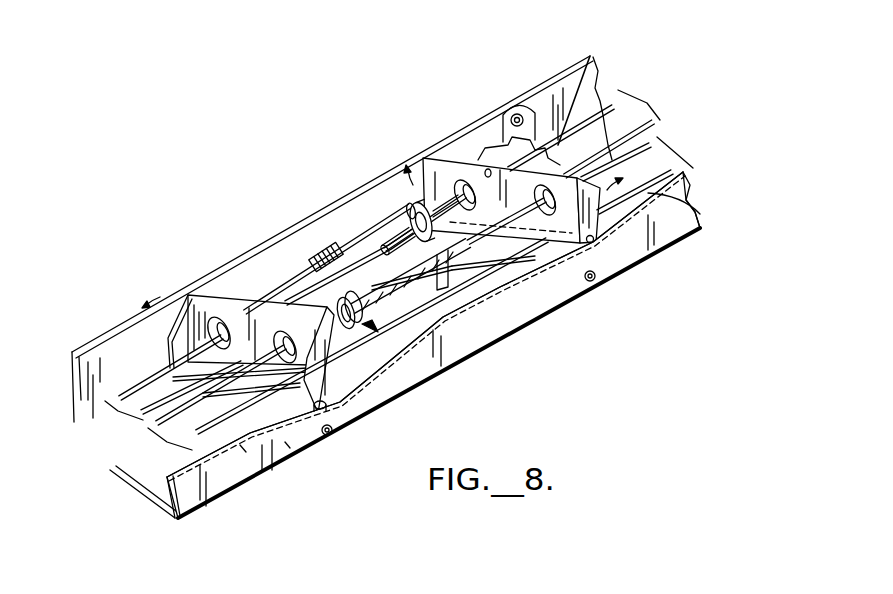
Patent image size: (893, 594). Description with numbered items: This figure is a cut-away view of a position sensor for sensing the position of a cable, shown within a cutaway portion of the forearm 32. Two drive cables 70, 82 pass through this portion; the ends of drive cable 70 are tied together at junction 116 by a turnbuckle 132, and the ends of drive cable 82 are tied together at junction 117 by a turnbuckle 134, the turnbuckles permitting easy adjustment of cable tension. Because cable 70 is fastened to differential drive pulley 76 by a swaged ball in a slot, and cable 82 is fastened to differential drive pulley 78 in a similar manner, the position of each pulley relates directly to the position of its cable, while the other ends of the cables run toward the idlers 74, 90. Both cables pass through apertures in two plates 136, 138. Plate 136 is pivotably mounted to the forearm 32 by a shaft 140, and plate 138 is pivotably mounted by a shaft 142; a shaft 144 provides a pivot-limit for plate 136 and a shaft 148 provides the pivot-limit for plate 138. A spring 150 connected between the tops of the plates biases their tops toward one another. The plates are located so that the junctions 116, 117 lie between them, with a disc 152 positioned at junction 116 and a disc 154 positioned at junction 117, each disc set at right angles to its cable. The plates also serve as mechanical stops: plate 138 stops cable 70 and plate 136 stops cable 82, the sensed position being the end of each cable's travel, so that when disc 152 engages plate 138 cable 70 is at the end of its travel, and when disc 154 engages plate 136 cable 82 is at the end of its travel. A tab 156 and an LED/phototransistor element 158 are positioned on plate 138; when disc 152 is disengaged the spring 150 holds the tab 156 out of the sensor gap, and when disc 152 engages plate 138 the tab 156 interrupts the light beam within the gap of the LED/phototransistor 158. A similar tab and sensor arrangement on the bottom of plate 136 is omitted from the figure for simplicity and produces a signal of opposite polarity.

The forearm 32 is at (330, 203).
The drive cable 70 is at (592, 125).
The idler 74 is at (93, 424).
The differential drive pulley 76 is at (690, 99).
The differential drive pulley 78 is at (707, 157).
The drive cable 82 is at (701, 214).
The idler 90 is at (117, 449).
The junction 116 is at (396, 222).
The junction 117 is at (447, 357).
The turnbuckle 132 is at (417, 204).
The turnbuckle 134 is at (367, 412).
The plate 136 is at (207, 294).
The plate 138 is at (448, 153).
The shaft 140 is at (253, 423).
The shaft 142 is at (517, 292).
The shaft 144 is at (288, 404).
The shaft 148 is at (592, 281).
The spring 150 is at (320, 252).
The disc 152 is at (408, 205).
The disc 154 is at (405, 382).
The tab 156 is at (538, 100).
The LED/phototransistor element 158 is at (500, 147).